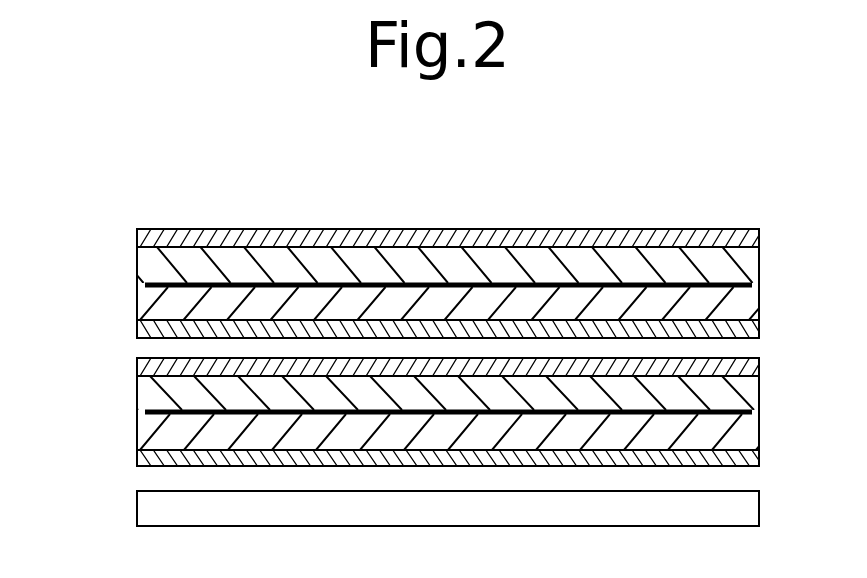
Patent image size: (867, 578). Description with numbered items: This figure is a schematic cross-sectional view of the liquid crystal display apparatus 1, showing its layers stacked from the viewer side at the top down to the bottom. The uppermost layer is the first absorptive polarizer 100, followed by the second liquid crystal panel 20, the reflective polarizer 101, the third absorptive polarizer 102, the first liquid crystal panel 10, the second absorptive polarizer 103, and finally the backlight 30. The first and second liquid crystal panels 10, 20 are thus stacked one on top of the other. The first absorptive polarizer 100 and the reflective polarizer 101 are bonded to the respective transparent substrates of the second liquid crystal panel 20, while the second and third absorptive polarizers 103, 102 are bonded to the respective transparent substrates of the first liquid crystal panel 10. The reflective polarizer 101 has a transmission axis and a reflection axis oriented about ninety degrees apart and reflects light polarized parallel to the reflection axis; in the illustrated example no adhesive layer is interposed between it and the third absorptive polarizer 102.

The liquid crystal display apparatus 1 is at (718, 198).
The first liquid crystal panel 10 is at (768, 373).
The second liquid crystal panel 20 is at (768, 245).
The backlight 30 is at (759, 507).
The first absorptive polarizer 100 is at (137, 238).
The reflective polarizer 101 is at (137, 323).
The third absorptive polarizer 102 is at (137, 367).
The second absorptive polarizer 103 is at (137, 462).